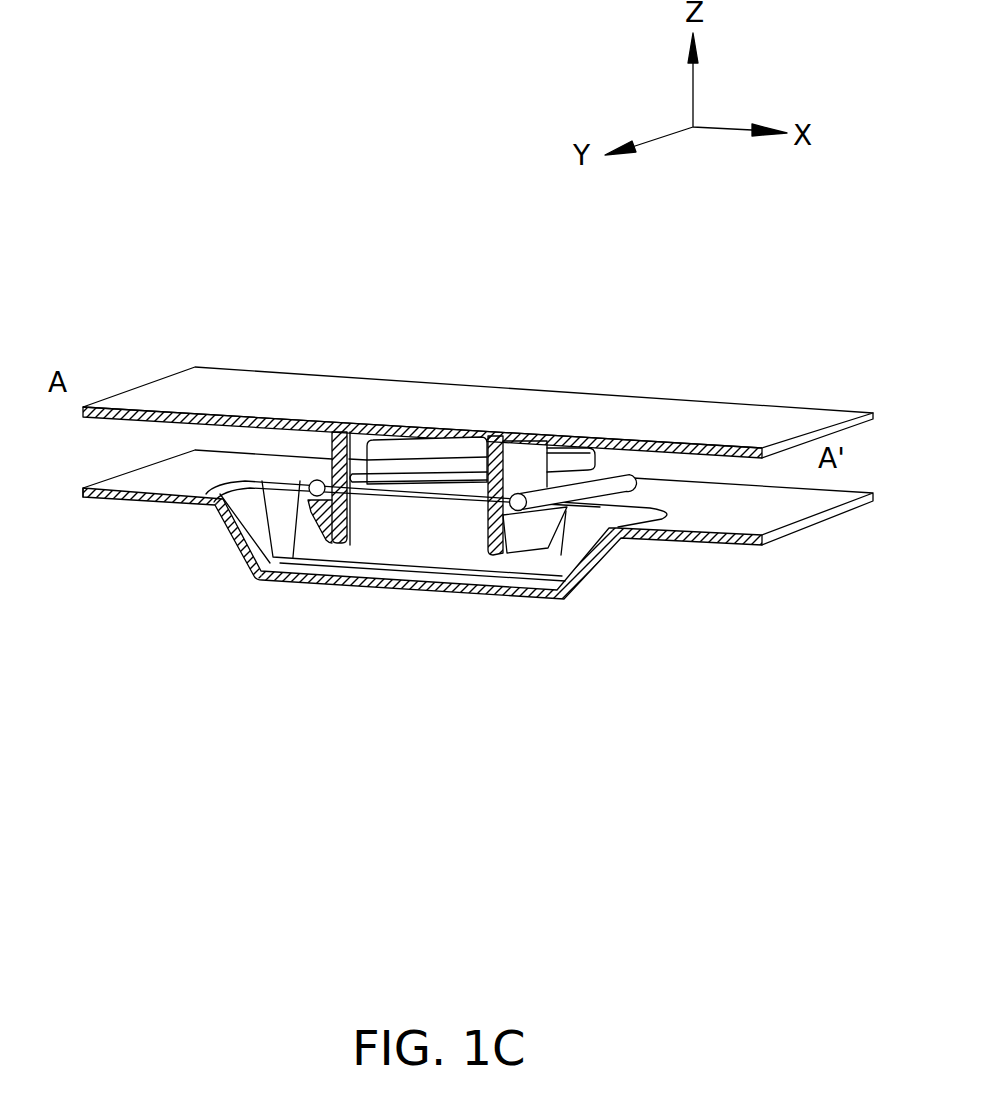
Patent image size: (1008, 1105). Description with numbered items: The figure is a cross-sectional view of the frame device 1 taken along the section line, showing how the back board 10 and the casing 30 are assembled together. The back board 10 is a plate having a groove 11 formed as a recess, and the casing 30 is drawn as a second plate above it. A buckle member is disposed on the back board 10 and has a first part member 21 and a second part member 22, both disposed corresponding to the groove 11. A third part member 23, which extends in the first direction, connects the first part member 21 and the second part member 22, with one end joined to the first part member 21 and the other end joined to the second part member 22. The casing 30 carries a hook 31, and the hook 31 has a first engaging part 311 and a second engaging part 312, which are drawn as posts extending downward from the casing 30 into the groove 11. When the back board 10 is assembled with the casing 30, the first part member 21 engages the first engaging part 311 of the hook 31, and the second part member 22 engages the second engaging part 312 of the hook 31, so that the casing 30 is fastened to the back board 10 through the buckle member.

The frame device 1 is at (278, 158).
The back board 10 is at (478, 565).
The groove 11 is at (420, 577).
The first part member 21 is at (245, 488).
The second part member 22 is at (605, 527).
The third part member 23 is at (603, 486).
The casing 30 is at (710, 410).
The hook 31 is at (377, 434).
The first engaging part 311 is at (348, 425).
The second engaging part 312 is at (521, 462).